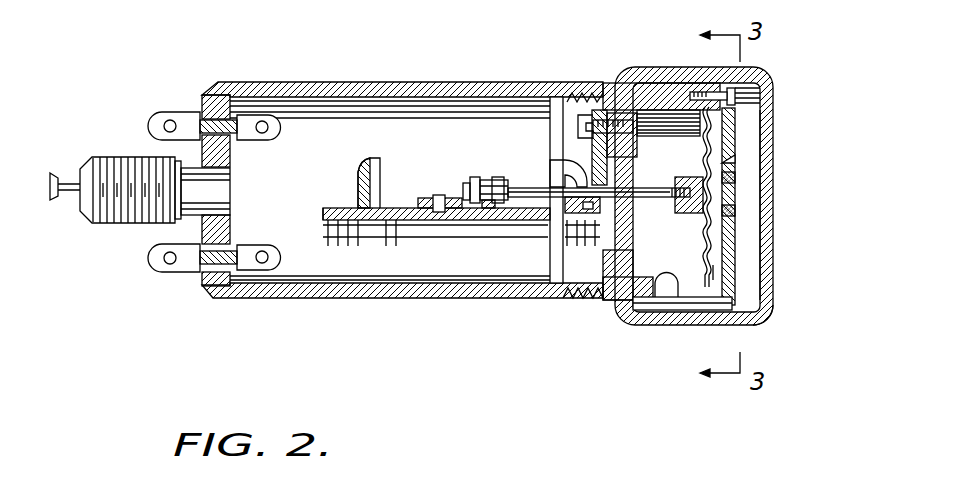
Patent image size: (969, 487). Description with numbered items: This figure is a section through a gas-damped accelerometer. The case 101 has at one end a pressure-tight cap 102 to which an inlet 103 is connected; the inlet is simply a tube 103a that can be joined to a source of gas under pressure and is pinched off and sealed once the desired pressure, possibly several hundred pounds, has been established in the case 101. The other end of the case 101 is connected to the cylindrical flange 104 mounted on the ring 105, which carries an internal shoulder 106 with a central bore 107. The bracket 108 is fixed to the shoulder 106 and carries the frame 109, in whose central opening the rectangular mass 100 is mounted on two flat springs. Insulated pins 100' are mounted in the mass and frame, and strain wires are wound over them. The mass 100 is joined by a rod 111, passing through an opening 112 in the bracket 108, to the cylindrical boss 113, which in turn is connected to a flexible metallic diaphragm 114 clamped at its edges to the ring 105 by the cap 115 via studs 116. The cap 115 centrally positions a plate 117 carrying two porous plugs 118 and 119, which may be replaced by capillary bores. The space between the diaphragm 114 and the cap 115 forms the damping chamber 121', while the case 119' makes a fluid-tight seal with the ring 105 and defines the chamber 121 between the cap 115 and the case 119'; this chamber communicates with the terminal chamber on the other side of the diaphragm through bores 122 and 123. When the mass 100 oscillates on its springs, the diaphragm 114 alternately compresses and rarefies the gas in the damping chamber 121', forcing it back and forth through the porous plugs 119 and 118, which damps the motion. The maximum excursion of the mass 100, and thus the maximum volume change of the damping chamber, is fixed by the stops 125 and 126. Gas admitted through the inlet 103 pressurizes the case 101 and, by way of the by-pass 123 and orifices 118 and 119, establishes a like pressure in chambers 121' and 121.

The rectangular mass 100 is at (461, 240).
The insulated pins 100' is at (461, 253).
The case 101 is at (290, 83).
The pressure-tight cap 102 is at (200, 226).
The inlet 103 is at (118, 157).
The tube 103a is at (67, 182).
The cylindrical flange 104 is at (575, 100).
The ring 105 is at (638, 80).
The internal shoulder 106 is at (637, 148).
The central bore 107 is at (620, 250).
The bracket 108 is at (594, 150).
The frame 109 is at (336, 208).
The rod 111 is at (518, 182).
The opening 112 is at (548, 212).
The cylindrical boss 113 is at (692, 177).
The flexible metallic diaphragm 114 is at (712, 125).
The cap 115 is at (730, 140).
The studs 116 is at (735, 97).
The plate 117 is at (735, 160).
The porous plug 118 is at (735, 178).
The porous plug 119 is at (769, 208).
The case 119' is at (729, 331).
The chamber 121 is at (780, 205).
The damping chamber 121' is at (767, 268).
The bore 122 is at (665, 287).
The bore 123 is at (678, 304).
The stop 125 is at (420, 205).
The stop 126 is at (438, 195).